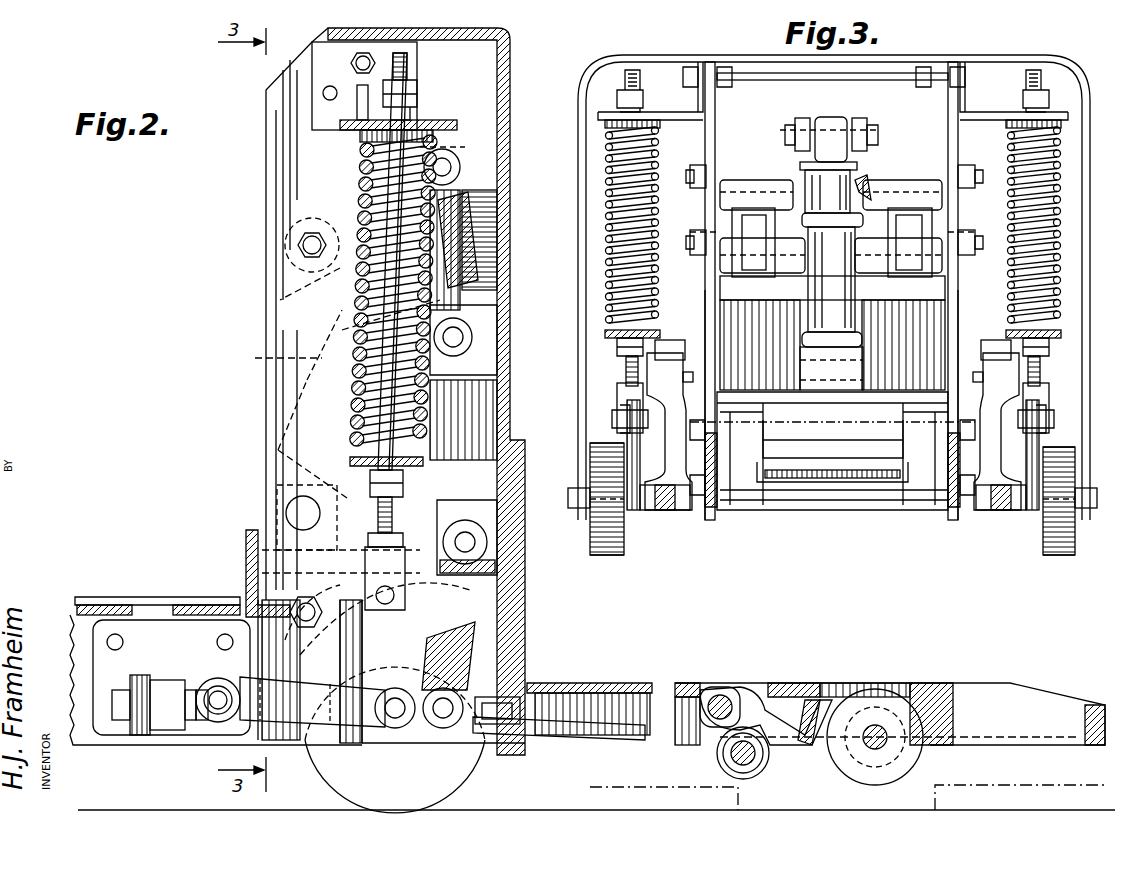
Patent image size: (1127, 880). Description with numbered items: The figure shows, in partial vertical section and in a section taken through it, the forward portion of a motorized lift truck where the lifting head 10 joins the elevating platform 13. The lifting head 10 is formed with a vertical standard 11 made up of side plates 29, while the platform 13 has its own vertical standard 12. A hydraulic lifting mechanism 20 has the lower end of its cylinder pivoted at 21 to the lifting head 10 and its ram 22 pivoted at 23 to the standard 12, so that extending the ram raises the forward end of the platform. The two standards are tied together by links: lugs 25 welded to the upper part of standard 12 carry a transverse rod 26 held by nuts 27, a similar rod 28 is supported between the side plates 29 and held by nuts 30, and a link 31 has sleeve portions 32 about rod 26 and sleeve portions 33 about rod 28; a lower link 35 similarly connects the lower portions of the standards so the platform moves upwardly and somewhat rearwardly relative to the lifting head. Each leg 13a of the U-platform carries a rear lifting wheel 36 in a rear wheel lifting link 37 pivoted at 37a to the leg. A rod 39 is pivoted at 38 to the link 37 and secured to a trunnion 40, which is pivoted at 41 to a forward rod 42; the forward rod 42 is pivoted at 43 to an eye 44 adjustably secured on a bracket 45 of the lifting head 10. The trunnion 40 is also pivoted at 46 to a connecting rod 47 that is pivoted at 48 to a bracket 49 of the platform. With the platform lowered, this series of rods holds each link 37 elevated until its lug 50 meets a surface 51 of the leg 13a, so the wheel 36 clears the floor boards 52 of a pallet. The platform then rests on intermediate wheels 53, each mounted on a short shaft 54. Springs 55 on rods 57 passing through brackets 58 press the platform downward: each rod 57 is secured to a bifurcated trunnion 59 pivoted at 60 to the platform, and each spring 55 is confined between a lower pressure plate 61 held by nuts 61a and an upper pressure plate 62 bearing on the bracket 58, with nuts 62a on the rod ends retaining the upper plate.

In FIG. 2, the lifting head 10 is at (322, 545).
In FIG. 3, the lifting head 10 is at (800, 405).
In FIG. 2, the vertical standard 11 is at (262, 190).
In FIG. 3, the vertical standard 11 is at (717, 102).
In FIG. 2, the vertical standard 12 is at (512, 214).
In FIG. 3, the vertical standard 12 is at (915, 57).
In FIG. 2, the elevating platform 13 is at (622, 680).
In FIG. 2, the leg 13a is at (685, 683).
In FIG. 2, the hydraulic lifting mechanism 20 is at (333, 384).
In FIG. 3, the hydraulic lifting mechanism 20 is at (812, 287).
In FIG. 2, the pivot 21 is at (290, 505).
In FIG. 3, the pivot 21 is at (800, 357).
In FIG. 2, the ram 22 is at (470, 160).
In FIG. 3, the ram 22 is at (832, 116).
In FIG. 2, the pivot 23 is at (462, 176).
In FIG. 3, the pivot 23 is at (880, 140).
In FIG. 2, the lugs 25 is at (485, 376).
In FIG. 3, the lugs 25 is at (705, 232).
In FIG. 2, the rod 26 is at (465, 338).
In FIG. 3, the rod 26 is at (692, 252).
In FIG. 2, the nuts 27 is at (474, 329).
In FIG. 3, the nuts 27 is at (700, 256).
In FIG. 2, the rod 28 is at (305, 250).
In FIG. 3, the rod 28 is at (692, 178).
In FIG. 2, the side plates 29 is at (272, 279).
In FIG. 3, the side plates 29 is at (705, 300).
In FIG. 2, the nuts 30 is at (300, 244).
In FIG. 3, the nuts 30 is at (700, 165).
In FIG. 2, the link 31 is at (285, 297).
In FIG. 3, the link 31 is at (741, 208).
In FIG. 3, the sleeve portions 32 is at (748, 277).
In FIG. 3, the sleeve portions 33 is at (752, 180).
In FIG. 2, the link 35 is at (302, 660).
In FIG. 3, the link 35 is at (822, 482).
In FIG. 2, the rear lifting wheel 36 is at (925, 752).
In FIG. 2, the rear wheel lifting link 37 is at (822, 752).
In FIG. 2, the pivot 37a is at (725, 700).
In FIG. 2, the pivot 38 is at (735, 757).
In FIG. 2, the rod 39 is at (590, 736).
In FIG. 2, the trunnion 40 is at (510, 726).
In FIG. 2, the pivot 41 is at (393, 718).
In FIG. 2, the forward rod 42 is at (300, 724).
In FIG. 3, the forward rod 42 is at (658, 510).
In FIG. 2, the pivot 43 is at (218, 722).
In FIG. 2, the eye 44 is at (198, 722).
In FIG. 2, the bracket 45 is at (150, 726).
In FIG. 2, the pivot 46 is at (440, 718).
In FIG. 2, the connecting rod 47 is at (480, 646).
In FIG. 3, the connecting rod 47 is at (660, 432).
In FIG. 2, the pivot 48 is at (472, 538).
In FIG. 3, the pivot 48 is at (688, 372).
In FIG. 2, the bracket 49 is at (490, 520).
In FIG. 3, the bracket 49 is at (678, 336).
In FIG. 2, the lug 50 is at (880, 700).
In FIG. 2, the surface 51 is at (860, 715).
In FIG. 2, the floor boards 52 is at (745, 790).
In FIG. 2, the intermediate wheels 53 is at (452, 778).
In FIG. 3, the intermediate wheels 53 is at (612, 555).
In FIG. 3, the short shaft 54 is at (602, 506).
In FIG. 2, the springs 55 is at (355, 331).
In FIG. 3, the springs 55 is at (610, 247).
In FIG. 2, the rod 57 is at (398, 264).
In FIG. 3, the rod 57 is at (627, 371).
In FIG. 2, the bracket 58 is at (428, 127).
In FIG. 3, the bracket 58 is at (640, 110).
In FIG. 2, the bifurcated trunnion 59 is at (385, 545).
In FIG. 3, the bifurcated trunnion 59 is at (620, 397).
In FIG. 2, the pivot 60 is at (377, 592).
In FIG. 3, the pivot 60 is at (615, 421).
In FIG. 2, the lower pressure plate 61 is at (422, 462).
In FIG. 3, the lower pressure plate 61 is at (610, 330).
In FIG. 2, the nuts 61a is at (402, 484).
In FIG. 3, the nuts 61a is at (618, 348).
In FIG. 2, the upper pressure plate 62 is at (360, 132).
In FIG. 3, the upper pressure plate 62 is at (605, 125).
In FIG. 2, the nuts 62a is at (420, 108).
In FIG. 3, the nuts 62a is at (630, 104).